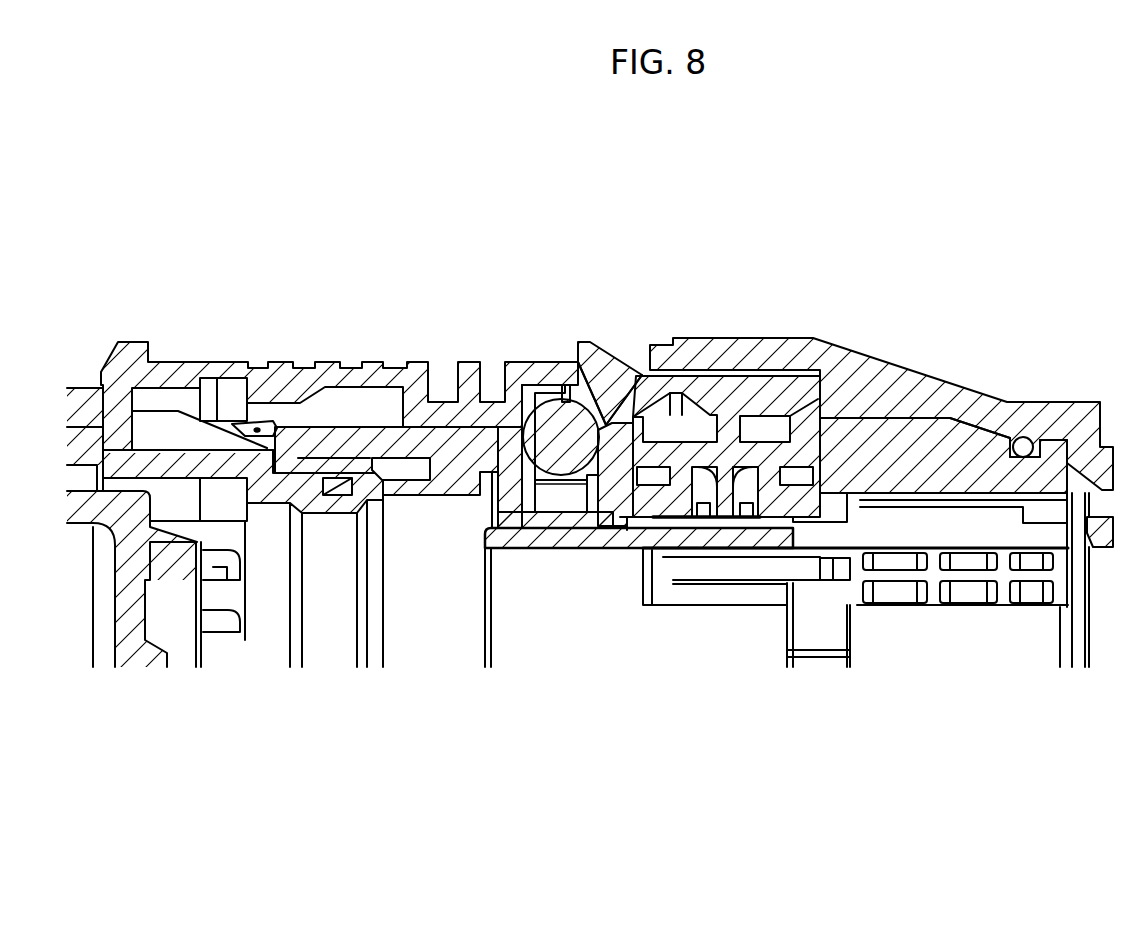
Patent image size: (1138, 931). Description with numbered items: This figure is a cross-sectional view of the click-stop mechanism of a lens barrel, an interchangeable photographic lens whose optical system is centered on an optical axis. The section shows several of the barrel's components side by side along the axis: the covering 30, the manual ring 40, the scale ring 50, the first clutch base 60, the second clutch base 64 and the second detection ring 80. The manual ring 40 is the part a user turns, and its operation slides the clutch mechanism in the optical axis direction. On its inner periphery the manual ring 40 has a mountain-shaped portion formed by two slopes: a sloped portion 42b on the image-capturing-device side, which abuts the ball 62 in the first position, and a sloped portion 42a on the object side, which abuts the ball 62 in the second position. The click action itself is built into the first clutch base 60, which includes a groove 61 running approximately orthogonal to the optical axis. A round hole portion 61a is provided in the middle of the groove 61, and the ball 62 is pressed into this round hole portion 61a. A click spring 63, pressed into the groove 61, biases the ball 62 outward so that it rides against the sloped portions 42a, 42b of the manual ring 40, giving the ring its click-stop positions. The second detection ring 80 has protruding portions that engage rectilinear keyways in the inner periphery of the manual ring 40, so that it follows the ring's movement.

The covering 30 is at (1073, 418).
The manual ring 40 is at (193, 360).
The sloped portion 42a is at (580, 344).
The sloped portion 42b is at (642, 408).
The scale ring 50 is at (90, 400).
The first clutch base 60 is at (407, 437).
The groove 61 is at (512, 470).
The round hole portion 61a is at (580, 520).
The ball 62 is at (548, 420).
The click spring 63 is at (560, 500).
The second clutch base 64 is at (930, 440).
The second detection ring 80 is at (760, 447).